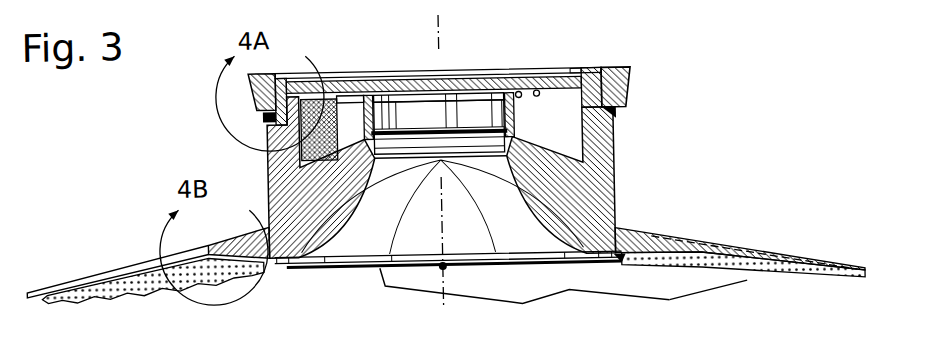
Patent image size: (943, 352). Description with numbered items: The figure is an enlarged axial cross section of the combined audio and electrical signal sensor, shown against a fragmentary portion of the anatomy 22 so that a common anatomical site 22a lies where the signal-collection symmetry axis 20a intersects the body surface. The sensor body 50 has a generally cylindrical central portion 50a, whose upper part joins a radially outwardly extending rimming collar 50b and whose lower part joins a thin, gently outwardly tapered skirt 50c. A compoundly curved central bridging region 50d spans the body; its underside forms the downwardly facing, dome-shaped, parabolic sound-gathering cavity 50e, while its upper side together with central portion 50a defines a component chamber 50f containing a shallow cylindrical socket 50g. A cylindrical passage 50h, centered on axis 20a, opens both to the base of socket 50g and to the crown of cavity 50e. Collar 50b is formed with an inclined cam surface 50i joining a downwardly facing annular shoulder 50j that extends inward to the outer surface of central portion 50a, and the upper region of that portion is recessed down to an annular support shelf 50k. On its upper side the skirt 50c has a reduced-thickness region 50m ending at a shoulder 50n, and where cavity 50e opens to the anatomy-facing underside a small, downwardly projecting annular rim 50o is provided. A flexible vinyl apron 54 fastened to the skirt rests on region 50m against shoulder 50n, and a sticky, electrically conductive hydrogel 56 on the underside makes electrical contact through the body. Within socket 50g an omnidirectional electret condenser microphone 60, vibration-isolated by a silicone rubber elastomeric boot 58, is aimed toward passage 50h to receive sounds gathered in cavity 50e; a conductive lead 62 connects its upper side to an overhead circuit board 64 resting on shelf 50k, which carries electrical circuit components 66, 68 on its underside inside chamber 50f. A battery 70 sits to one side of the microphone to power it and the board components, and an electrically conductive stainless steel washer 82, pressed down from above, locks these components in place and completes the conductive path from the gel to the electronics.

The signal-collection symmetry axis 20a is at (516, 242).
The anatomy 22 is at (497, 300).
The anatomical site 22a is at (439, 268).
The sensor body 50 is at (706, 177).
The central portion 50a is at (597, 158).
The rimming collar 50b is at (669, 56).
The skirt 50c is at (666, 216).
The central bridging region 50d is at (330, 193).
The sound-gathering cavity 50e is at (324, 293).
The component chamber 50f is at (548, 108).
The socket 50g is at (464, 140).
The passage 50h is at (460, 155).
The inclined cam surface 50i is at (689, 119).
The annular shoulder 50j is at (617, 118).
The support shelf 50k is at (289, 84).
The reduced-thickness region 50m is at (756, 240).
The shoulder 50n is at (231, 230).
The annular rim 50o is at (685, 298).
The flexible vinyl apron 54 is at (813, 268).
The electrically conductive hydrogel 56 is at (743, 274).
The elastomeric boot 58 is at (373, 122).
The electret condenser microphone 60 is at (438, 117).
The conductive lead 62 is at (427, 95).
The circuit board 64 is at (366, 102).
The electrical circuit component 66 is at (520, 99).
The electrical circuit component 68 is at (565, 100).
The battery 70 is at (310, 150).
The electrically conductive washer 82 is at (256, 114).